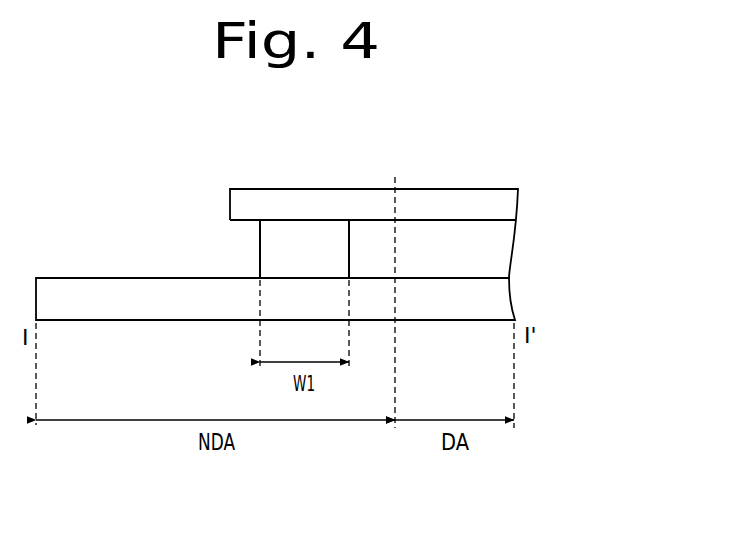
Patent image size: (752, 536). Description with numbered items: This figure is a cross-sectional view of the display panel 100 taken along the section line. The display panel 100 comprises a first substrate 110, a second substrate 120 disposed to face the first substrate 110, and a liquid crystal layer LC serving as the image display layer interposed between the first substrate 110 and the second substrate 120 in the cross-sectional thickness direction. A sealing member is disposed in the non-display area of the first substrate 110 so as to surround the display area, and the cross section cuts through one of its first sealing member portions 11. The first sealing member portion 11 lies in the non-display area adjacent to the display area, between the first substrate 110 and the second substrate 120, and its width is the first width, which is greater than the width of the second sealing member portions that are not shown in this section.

The display panel 100 is at (351, 255).
The first substrate 110 is at (505, 207).
The liquid crystal layer LC is at (500, 256).
The second substrate 120 is at (318, 299).
The first sealing member portion 11 is at (277, 249).